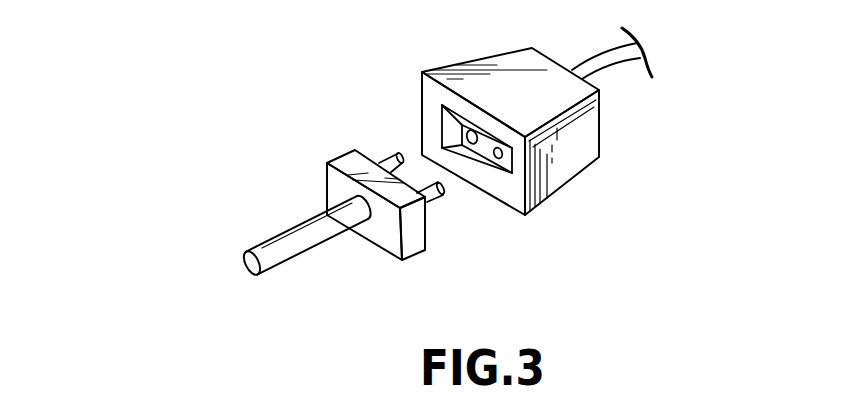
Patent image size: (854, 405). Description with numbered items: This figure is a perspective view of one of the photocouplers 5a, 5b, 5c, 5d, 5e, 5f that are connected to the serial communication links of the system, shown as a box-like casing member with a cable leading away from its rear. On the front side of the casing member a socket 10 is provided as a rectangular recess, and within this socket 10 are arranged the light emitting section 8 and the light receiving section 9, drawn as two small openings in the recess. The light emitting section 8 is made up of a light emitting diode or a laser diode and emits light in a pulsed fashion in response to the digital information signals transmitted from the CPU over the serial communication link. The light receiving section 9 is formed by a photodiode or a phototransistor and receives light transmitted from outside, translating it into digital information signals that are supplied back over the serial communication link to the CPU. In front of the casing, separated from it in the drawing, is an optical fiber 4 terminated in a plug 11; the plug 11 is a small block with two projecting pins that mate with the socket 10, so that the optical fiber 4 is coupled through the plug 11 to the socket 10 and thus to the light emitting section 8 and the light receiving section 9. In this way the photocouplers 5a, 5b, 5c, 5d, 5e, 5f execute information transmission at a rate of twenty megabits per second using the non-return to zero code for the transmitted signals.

The optical fiber 4 is at (318, 247).
The plug 11 is at (413, 250).
The light emitting section 8 is at (438, 170).
The light receiving section 9 is at (497, 161).
The socket 10 is at (472, 148).
The photocoupler 5a is at (566, 148).
The photocoupler 5b is at (566, 148).
The photocoupler 5c is at (566, 148).
The photocoupler 5d is at (566, 148).
The photocoupler 5e is at (566, 148).
The photocoupler 5f is at (566, 148).